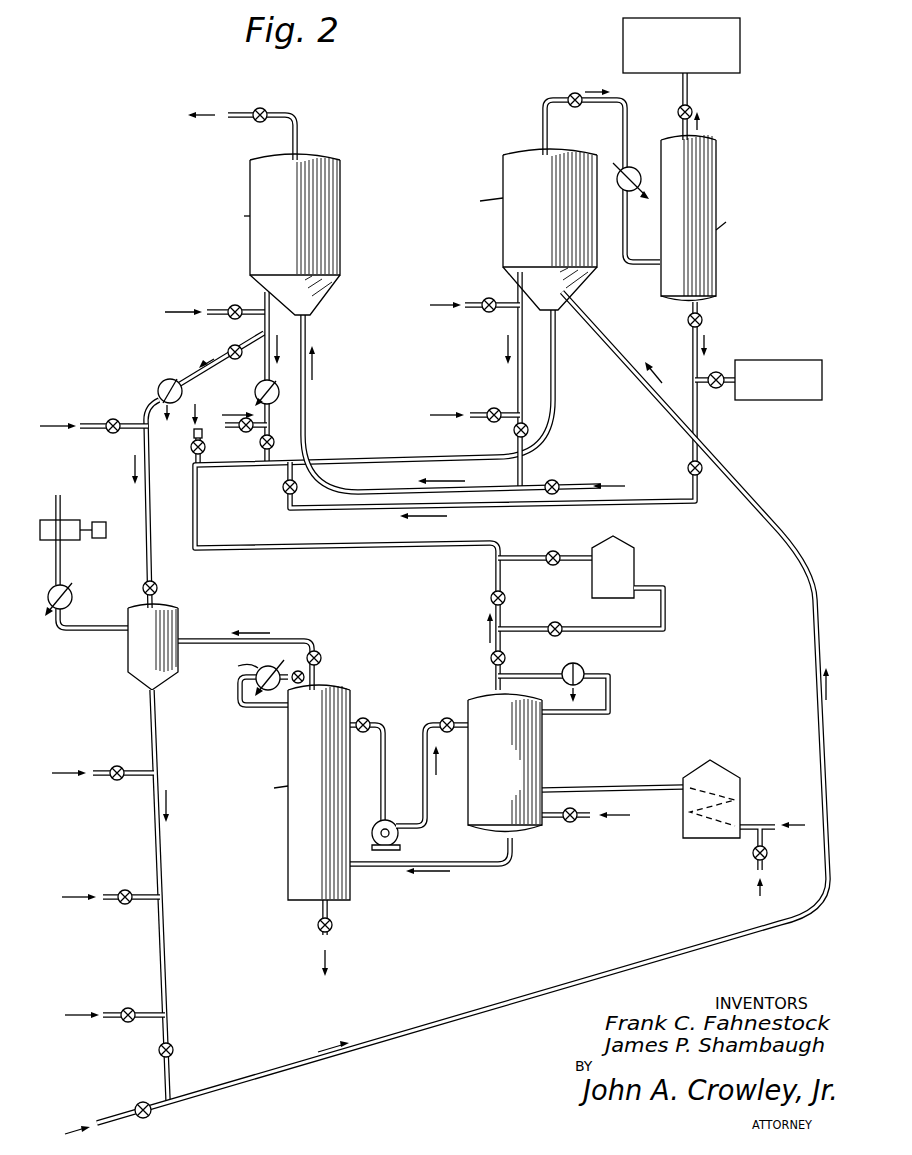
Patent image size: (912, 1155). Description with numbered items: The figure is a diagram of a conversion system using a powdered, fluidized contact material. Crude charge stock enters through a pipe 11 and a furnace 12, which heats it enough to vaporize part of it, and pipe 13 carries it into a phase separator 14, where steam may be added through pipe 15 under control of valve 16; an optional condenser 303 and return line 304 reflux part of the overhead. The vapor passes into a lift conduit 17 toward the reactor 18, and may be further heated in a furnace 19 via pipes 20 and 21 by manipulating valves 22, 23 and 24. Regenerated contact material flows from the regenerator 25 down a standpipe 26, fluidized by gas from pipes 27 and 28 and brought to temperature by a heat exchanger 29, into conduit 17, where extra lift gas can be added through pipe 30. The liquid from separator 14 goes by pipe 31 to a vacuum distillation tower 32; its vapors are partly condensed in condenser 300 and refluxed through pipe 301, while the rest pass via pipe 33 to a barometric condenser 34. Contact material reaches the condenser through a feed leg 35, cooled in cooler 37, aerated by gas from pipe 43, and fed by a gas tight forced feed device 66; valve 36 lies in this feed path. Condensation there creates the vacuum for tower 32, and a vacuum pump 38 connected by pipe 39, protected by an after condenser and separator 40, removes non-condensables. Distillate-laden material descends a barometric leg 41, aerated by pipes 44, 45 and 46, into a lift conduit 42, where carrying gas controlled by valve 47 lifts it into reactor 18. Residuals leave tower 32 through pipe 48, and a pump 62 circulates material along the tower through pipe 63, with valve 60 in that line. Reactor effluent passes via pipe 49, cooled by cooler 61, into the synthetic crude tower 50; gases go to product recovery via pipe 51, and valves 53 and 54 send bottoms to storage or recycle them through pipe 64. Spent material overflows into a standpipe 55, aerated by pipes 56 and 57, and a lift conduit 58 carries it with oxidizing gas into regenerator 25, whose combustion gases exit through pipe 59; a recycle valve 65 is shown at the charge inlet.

The pipe 11 is at (750, 835).
The furnace 12 is at (732, 782).
The pipe 13 is at (612, 791).
The phase separator 14 is at (505, 763).
The pipe 15 is at (580, 820).
The valve 16 is at (566, 824).
The lift conduit 17 is at (197, 510).
The reactor 18 is at (503, 234).
The furnace 19 is at (613, 567).
The pipe 20 is at (668, 603).
The pipe 21 is at (572, 562).
The valve 22 is at (562, 624).
The valve 23 is at (506, 598).
The valve 24 is at (553, 550).
The regenerator 25 is at (256, 178).
The standpipe 26 is at (260, 382).
The pipe 27 is at (222, 300).
The pipe 28 is at (228, 432).
The heat exchanger 29 is at (272, 406).
The pipe 30 is at (192, 441).
The pipe 31 is at (482, 867).
The vacuum distillation tower 32 is at (288, 840).
The pipe 33 is at (298, 637).
The barometric condenser 34 is at (128, 655).
The pipe 35 is at (183, 388).
The valve 36 is at (232, 350).
The cooler 37 is at (158, 384).
The vacuum pump 38 is at (82, 540).
The pipe 39 is at (64, 573).
The after condenser and separator 40 is at (72, 601).
The barometric leg 41 is at (158, 935).
The lift conduit 42 is at (276, 1085).
The pipe 43 is at (98, 413).
The pipe 44 is at (103, 768).
The pipe 45 is at (110, 893).
The pipe 46 is at (112, 1011).
The valve 47 is at (144, 1118).
The pipe 48 is at (318, 918).
The pipe 49 is at (542, 102).
The synthetic crude tower 50 is at (718, 284).
The pipe 51 is at (688, 94).
The valve 53 is at (716, 390).
The valve 54 is at (704, 478).
The standpipe 55 is at (518, 352).
The pipe 56 is at (478, 291).
The pipe 57 is at (490, 404).
The lift conduit 58 is at (309, 343).
The pipe 59 is at (298, 118).
The line 60 is at (378, 720).
The cooler 61 is at (618, 191).
The pump 62 is at (400, 836).
The pipe 63 is at (428, 800).
The pipe 64 is at (660, 508).
The valve 65 is at (768, 853).
The gas tight forced feed device 66 is at (158, 588).
The condenser 300 is at (270, 706).
The pipe 301 is at (238, 694).
The condenser 303 is at (582, 667).
The return line 304 is at (614, 692).